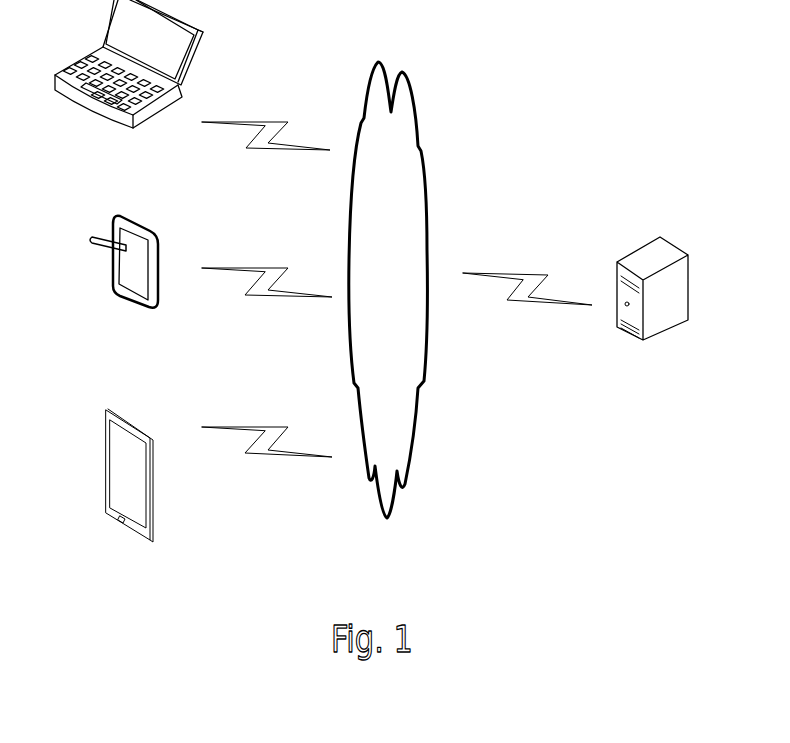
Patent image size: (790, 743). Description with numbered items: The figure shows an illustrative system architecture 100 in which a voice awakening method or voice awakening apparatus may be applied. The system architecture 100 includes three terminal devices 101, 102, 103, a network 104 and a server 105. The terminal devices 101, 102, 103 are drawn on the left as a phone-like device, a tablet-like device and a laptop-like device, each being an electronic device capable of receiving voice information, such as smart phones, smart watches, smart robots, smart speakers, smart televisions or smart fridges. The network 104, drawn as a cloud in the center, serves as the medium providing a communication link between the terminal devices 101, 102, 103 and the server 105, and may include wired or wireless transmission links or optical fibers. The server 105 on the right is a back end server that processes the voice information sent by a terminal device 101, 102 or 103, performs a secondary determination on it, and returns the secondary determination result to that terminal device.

The system architecture 100 is at (680, 38).
The terminal device 101 is at (129, 498).
The terminal device 102 is at (124, 284).
The terminal device 103 is at (129, 86).
The network 104 is at (388, 290).
The server 105 is at (652, 313).